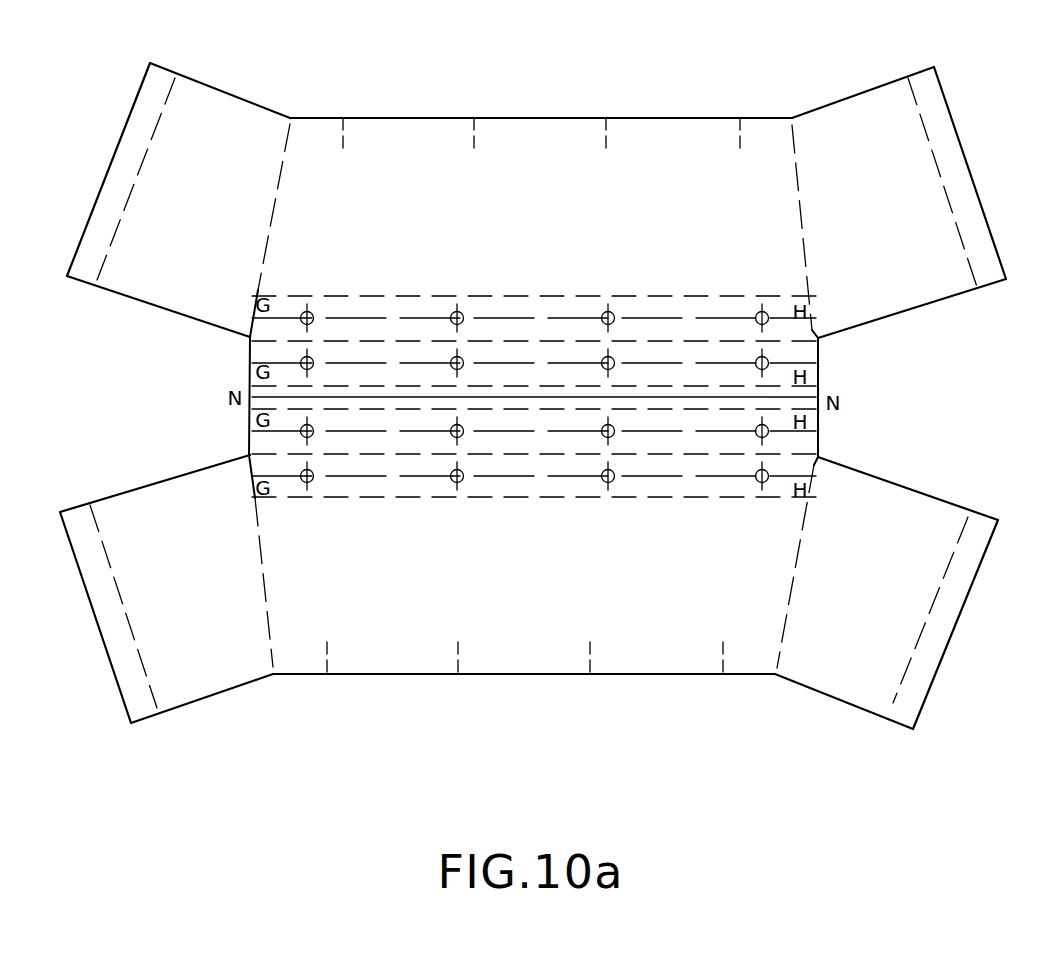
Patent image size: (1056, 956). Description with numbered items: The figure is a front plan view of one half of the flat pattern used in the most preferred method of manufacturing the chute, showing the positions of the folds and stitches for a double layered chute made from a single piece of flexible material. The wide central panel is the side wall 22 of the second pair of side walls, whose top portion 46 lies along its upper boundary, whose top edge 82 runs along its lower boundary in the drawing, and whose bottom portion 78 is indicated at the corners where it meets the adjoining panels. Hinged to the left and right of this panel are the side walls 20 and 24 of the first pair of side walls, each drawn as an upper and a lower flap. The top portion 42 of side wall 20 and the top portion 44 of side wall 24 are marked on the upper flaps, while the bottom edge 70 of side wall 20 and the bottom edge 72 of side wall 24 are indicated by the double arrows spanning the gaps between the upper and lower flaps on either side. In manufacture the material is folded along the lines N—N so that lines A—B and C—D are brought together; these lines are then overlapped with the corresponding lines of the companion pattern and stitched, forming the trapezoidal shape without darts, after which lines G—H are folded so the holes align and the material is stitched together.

The side wall 20 is at (250, 80).
The side wall 22 is at (495, 105).
The side wall 24 is at (840, 725).
The top portion 42 is at (212, 92).
The top portion 44 is at (910, 132).
The top portion 46 is at (410, 127).
The bottom edge 70 is at (171, 325).
The bottom edge 72 is at (904, 330).
The bottom portion 78 is at (317, 162).
The top edge 82 is at (646, 690).